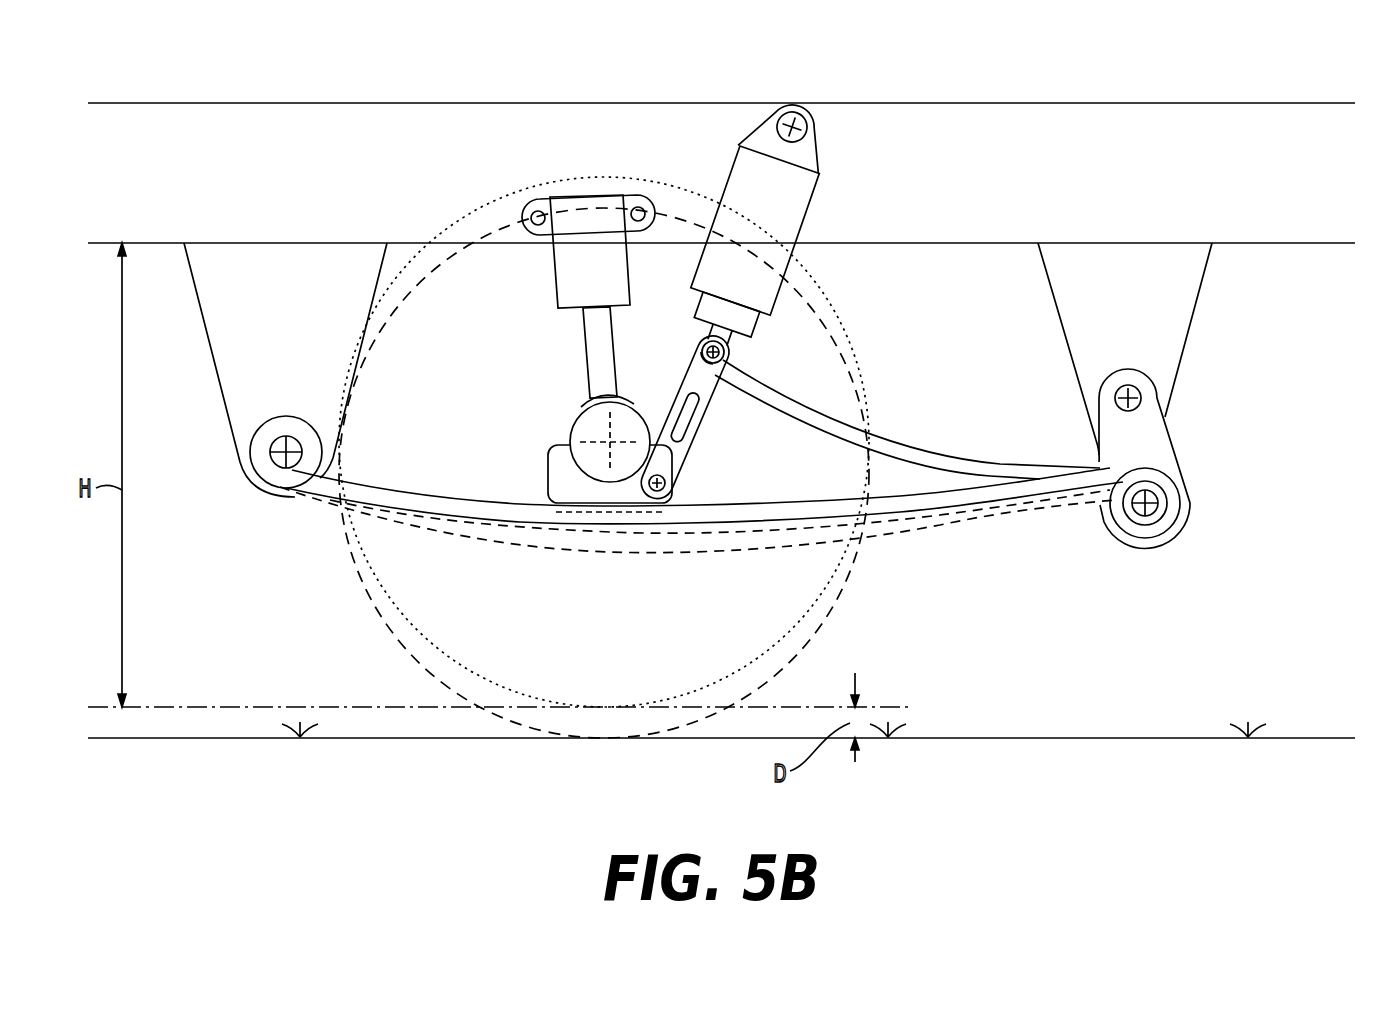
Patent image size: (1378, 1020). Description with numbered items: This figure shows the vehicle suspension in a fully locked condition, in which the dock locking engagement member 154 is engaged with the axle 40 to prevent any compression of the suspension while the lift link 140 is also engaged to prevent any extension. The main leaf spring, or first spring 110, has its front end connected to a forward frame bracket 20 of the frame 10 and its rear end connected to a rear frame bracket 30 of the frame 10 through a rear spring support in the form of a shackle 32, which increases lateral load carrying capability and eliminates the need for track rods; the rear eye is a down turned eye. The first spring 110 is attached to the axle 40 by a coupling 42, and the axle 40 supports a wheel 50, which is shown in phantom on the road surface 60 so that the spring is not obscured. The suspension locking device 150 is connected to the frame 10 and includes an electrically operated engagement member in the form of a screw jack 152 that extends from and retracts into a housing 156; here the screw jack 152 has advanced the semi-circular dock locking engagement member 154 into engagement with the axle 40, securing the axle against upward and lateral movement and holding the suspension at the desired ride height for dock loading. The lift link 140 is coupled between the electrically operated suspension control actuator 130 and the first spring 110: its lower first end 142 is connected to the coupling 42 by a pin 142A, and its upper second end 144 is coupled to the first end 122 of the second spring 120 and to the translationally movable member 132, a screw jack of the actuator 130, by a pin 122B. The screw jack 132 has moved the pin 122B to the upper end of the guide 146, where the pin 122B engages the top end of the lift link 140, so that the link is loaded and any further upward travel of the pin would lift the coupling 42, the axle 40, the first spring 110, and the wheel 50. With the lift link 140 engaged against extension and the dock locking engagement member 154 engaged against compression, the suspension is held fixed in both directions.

The frame 10 is at (505, 125).
The forward frame bracket 20 is at (224, 338).
The rear frame bracket 30 is at (1197, 297).
The shackle 32 is at (1172, 440).
The axle 40 is at (575, 425).
The coupling 42 is at (548, 458).
The wheel 50 is at (608, 198).
The road surface 60 is at (1147, 812).
The first spring 110 is at (468, 502).
The second spring 120 is at (863, 469).
The first end of the second spring 122 is at (742, 385).
The pin 122B is at (700, 352).
The suspension control actuator 130 is at (764, 223).
The translationally movable member 132 is at (724, 344).
The lift link 140 is at (704, 479).
The first end of the lift link 142 is at (668, 481).
The pin 142A is at (657, 492).
The second end of the lift link 144 is at (720, 335).
The guide 146 is at (684, 417).
The suspension locking device 150 is at (580, 261).
The screw jack 152 is at (592, 374).
The dock locking engagement member 154 is at (628, 400).
The housing 156 is at (628, 258).